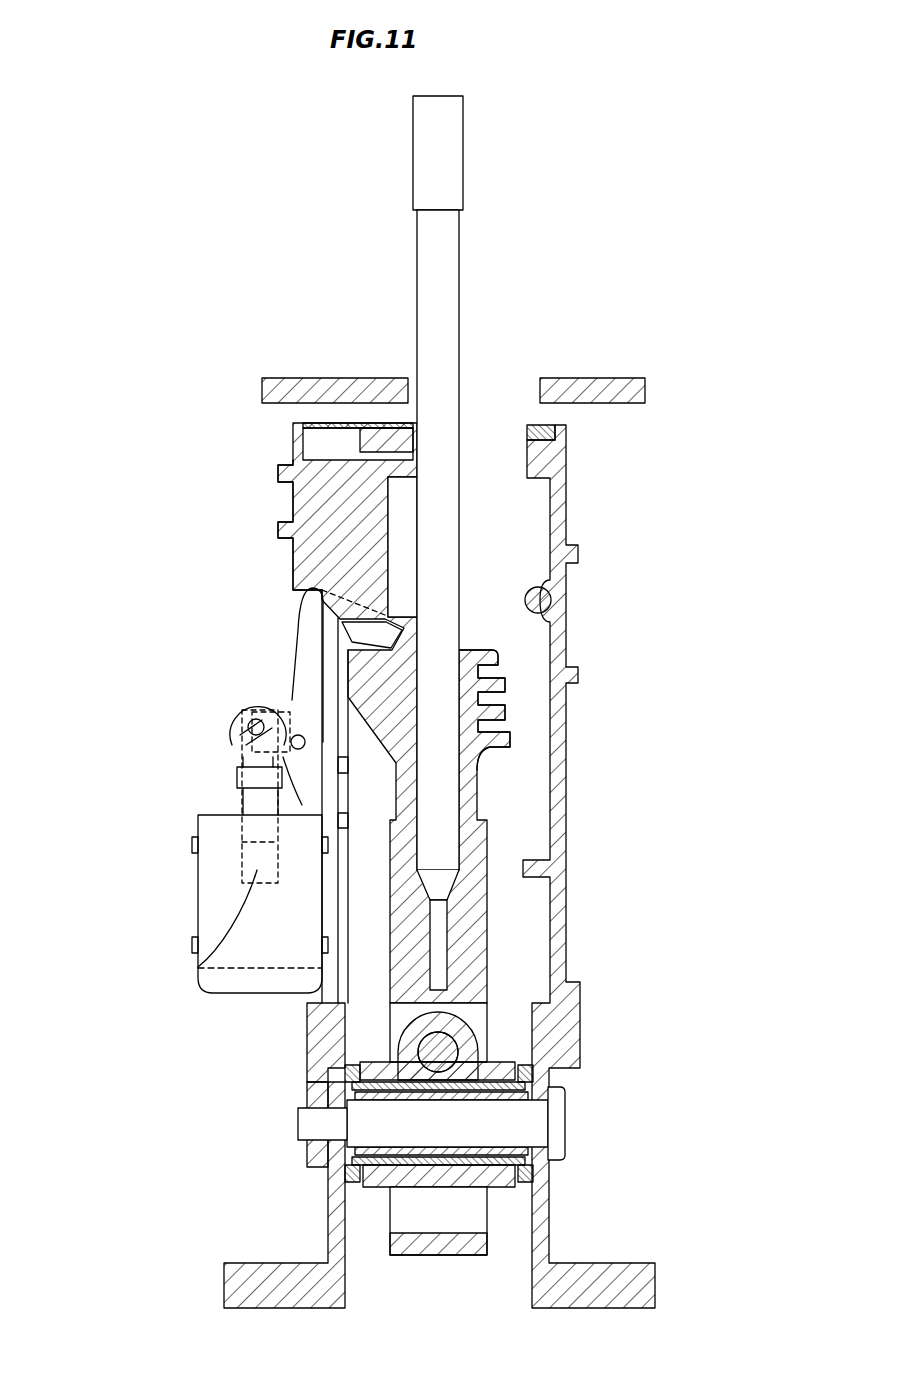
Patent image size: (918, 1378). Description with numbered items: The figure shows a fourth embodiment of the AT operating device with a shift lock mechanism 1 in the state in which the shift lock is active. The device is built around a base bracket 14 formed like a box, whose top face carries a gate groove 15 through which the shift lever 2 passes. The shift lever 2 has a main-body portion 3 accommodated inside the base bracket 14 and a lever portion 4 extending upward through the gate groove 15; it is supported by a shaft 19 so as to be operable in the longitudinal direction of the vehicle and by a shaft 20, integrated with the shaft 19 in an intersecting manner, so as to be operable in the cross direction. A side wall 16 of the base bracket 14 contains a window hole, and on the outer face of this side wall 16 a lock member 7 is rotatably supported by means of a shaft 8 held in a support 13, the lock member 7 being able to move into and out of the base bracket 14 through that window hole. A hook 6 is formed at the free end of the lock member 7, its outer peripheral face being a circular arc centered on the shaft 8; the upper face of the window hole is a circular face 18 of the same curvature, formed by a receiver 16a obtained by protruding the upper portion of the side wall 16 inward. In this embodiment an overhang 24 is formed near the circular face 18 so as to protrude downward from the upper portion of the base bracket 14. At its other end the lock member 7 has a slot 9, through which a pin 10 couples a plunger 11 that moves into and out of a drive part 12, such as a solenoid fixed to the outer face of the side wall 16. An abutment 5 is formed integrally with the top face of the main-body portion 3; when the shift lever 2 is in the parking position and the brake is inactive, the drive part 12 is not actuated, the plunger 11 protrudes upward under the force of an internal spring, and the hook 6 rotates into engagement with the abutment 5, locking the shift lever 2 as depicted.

The shift lock mechanism 1 is at (204, 352).
The shift lever 2 is at (465, 290).
The main-body portion 3 is at (500, 744).
The lever portion 4 is at (442, 623).
The abutment 5 is at (380, 592).
The hook 6 is at (395, 640).
The lock member 7 is at (312, 630).
The shaft 8 is at (250, 696).
The slot 9 is at (244, 742).
The pin 10 is at (245, 768).
The plunger 11 is at (200, 968).
The drive part 12 is at (213, 882).
The support 13 is at (292, 812).
The base bracket 14 is at (582, 470).
The gate groove 15 is at (527, 425).
The side wall 16 is at (322, 907).
The receiver 16a is at (312, 557).
The circular face 18 is at (298, 594).
The shaft 19 is at (572, 1126).
The shaft 20 is at (443, 1053).
The overhang 24 is at (385, 603).